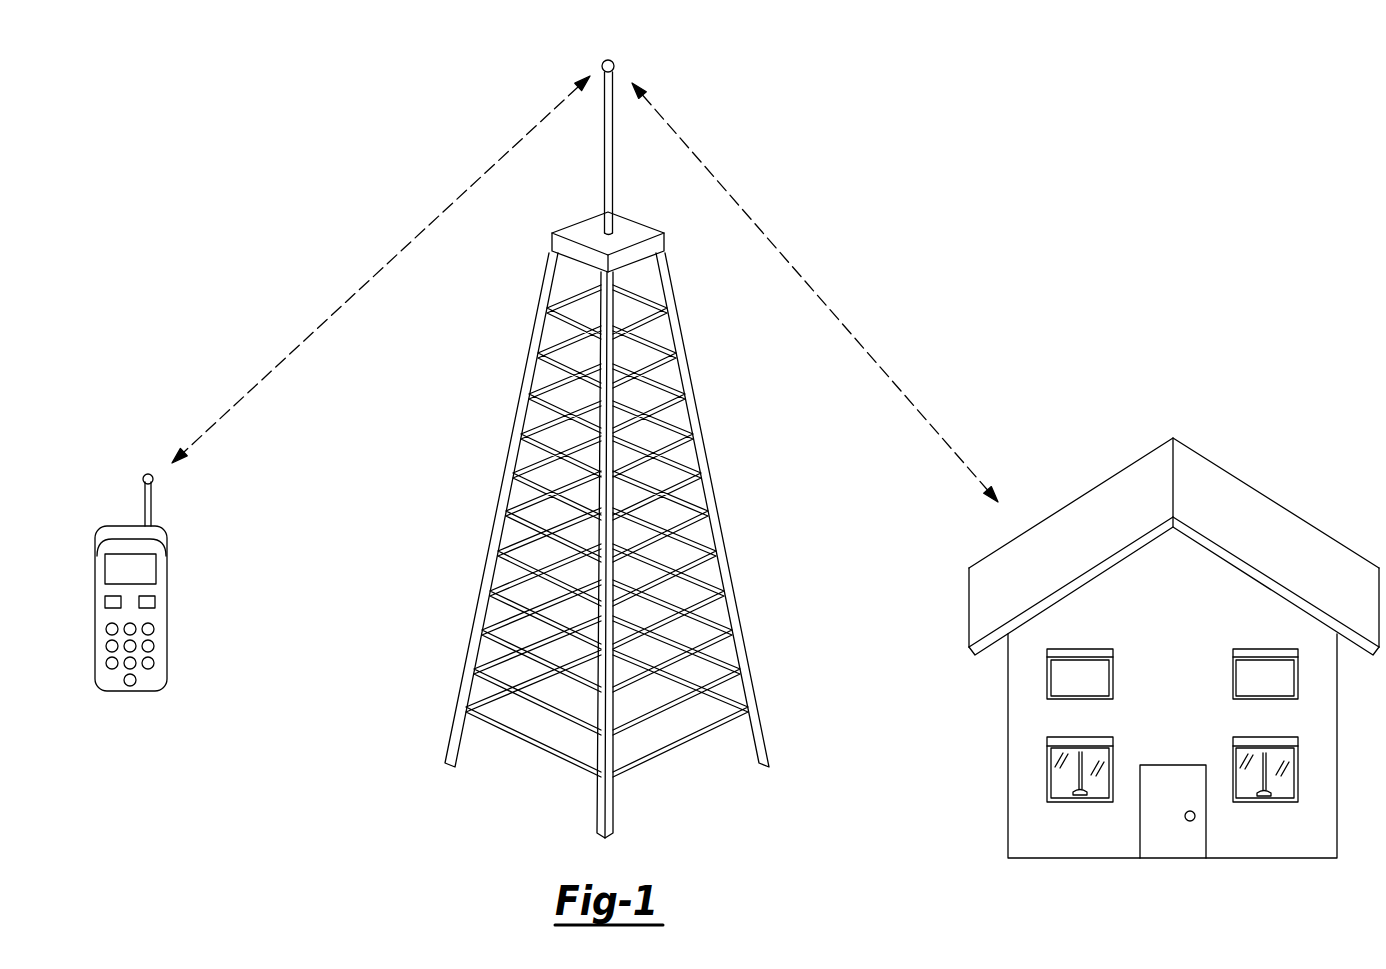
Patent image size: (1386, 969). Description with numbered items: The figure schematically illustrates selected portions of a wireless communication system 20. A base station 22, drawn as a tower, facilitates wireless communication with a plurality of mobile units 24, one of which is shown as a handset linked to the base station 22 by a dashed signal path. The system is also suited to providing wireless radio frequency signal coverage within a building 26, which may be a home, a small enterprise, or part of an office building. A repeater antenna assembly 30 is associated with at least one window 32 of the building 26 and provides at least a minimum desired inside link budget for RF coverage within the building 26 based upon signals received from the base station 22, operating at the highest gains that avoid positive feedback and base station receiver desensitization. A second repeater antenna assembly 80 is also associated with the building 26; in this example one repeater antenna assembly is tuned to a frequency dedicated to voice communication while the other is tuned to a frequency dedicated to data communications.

The wireless communication system 20 is at (884, 251).
The base station 22 is at (516, 412).
The mobile unit 24 is at (167, 606).
The building 26 is at (1275, 521).
The repeater antenna assembly 30 is at (1060, 794).
The window 32 is at (1060, 777).
The second repeater antenna assembly 80 is at (1285, 787).